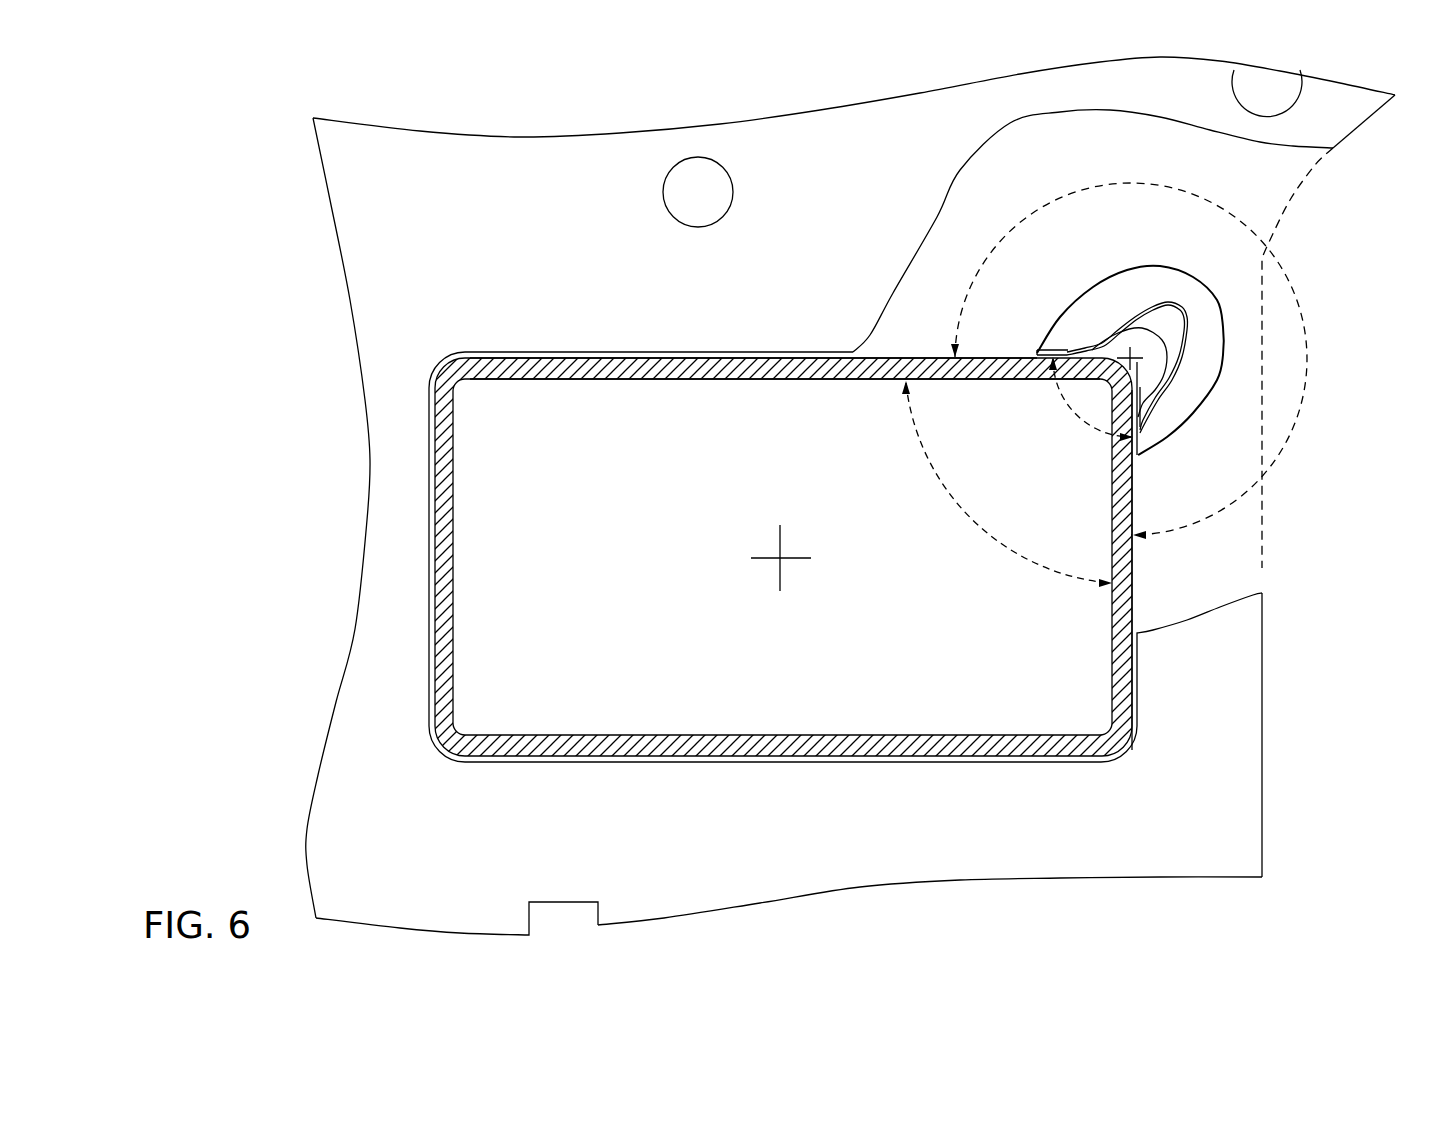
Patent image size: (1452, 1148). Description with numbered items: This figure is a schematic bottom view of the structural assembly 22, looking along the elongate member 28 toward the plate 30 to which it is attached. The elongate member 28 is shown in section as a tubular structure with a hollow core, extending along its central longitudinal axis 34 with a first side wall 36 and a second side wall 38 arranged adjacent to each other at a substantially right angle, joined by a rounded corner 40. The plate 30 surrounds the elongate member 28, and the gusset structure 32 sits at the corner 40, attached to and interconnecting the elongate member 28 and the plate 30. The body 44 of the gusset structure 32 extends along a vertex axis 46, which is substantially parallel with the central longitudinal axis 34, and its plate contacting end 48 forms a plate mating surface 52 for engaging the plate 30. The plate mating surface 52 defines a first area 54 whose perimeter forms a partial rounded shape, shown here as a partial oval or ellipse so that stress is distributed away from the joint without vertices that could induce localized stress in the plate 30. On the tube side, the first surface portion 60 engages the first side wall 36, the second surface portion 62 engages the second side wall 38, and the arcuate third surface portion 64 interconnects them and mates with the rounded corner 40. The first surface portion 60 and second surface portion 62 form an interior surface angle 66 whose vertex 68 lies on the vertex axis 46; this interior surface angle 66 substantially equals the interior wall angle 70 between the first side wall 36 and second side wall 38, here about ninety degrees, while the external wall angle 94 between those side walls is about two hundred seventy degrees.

The structural assembly 22 is at (1312, 282).
The elongate member 28 is at (720, 745).
The plate 30 is at (1193, 685).
The gusset structure 32 is at (1228, 357).
The central longitudinal axis 34 is at (776, 564).
The first side wall 36 is at (1133, 572).
The second side wall 38 is at (747, 370).
The corner 40 is at (1082, 384).
The body 44 is at (1142, 357).
The vertex axis 46 is at (1132, 360).
The plate contacting end 48 is at (1180, 385).
The plate mating surface 52 is at (1080, 327).
The first area 54 is at (1177, 288).
The first surface portion 60 is at (1137, 454).
The second surface portion 62 is at (1037, 353).
The third surface portion 64 is at (1128, 352).
The interior surface angle 66 is at (1072, 412).
The vertex 68 is at (1142, 330).
The interior wall angle 70 is at (987, 540).
The external wall angle 94 is at (1304, 318).